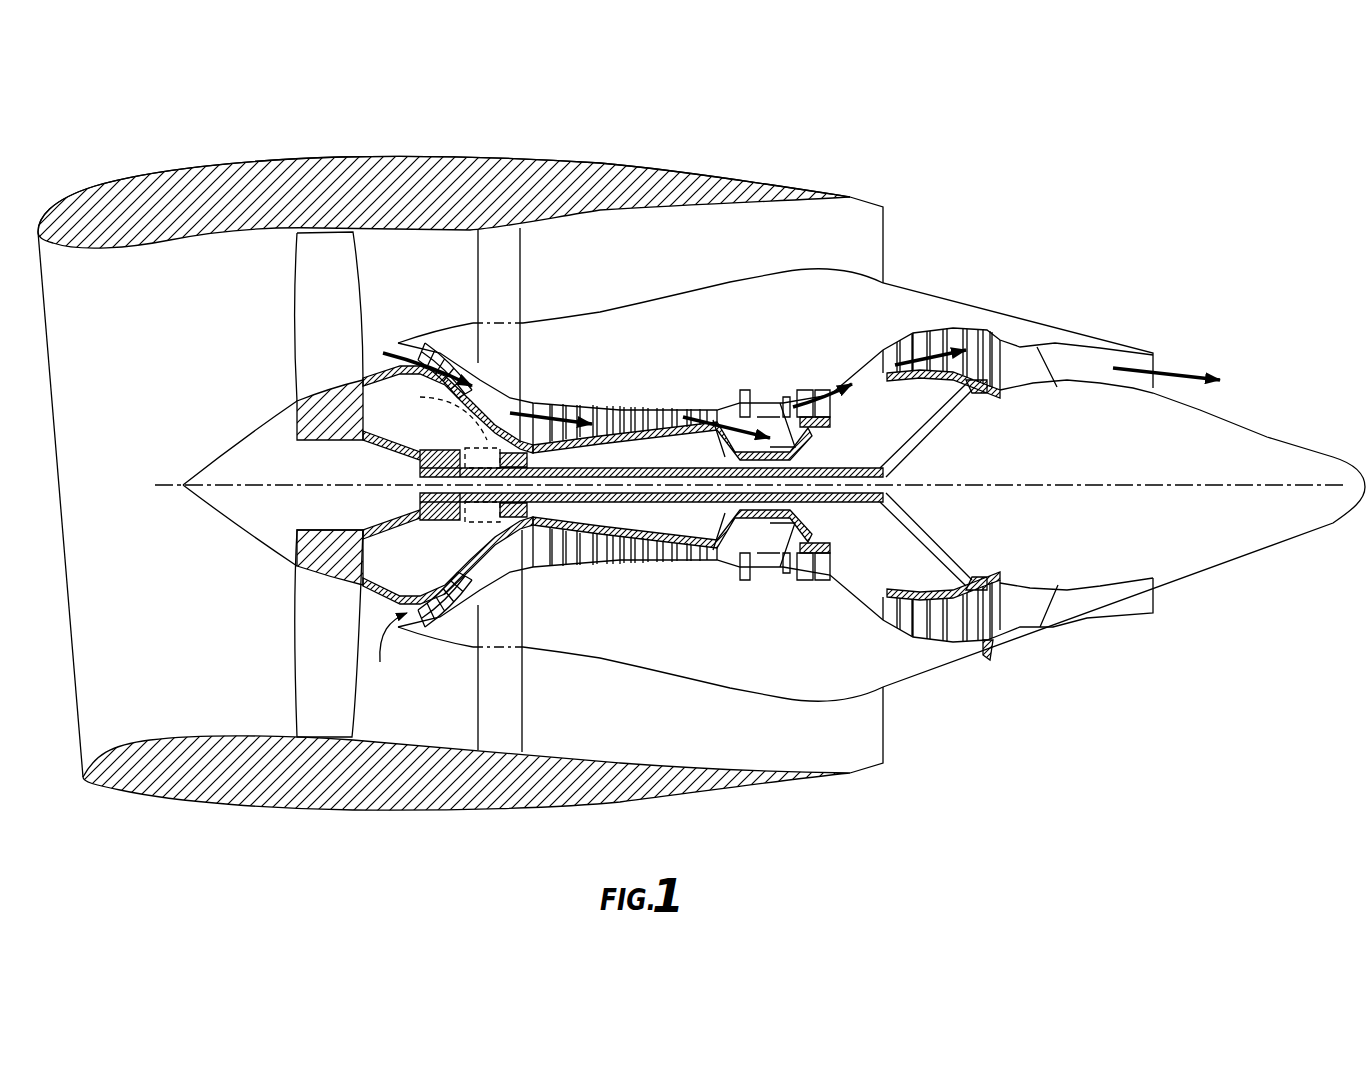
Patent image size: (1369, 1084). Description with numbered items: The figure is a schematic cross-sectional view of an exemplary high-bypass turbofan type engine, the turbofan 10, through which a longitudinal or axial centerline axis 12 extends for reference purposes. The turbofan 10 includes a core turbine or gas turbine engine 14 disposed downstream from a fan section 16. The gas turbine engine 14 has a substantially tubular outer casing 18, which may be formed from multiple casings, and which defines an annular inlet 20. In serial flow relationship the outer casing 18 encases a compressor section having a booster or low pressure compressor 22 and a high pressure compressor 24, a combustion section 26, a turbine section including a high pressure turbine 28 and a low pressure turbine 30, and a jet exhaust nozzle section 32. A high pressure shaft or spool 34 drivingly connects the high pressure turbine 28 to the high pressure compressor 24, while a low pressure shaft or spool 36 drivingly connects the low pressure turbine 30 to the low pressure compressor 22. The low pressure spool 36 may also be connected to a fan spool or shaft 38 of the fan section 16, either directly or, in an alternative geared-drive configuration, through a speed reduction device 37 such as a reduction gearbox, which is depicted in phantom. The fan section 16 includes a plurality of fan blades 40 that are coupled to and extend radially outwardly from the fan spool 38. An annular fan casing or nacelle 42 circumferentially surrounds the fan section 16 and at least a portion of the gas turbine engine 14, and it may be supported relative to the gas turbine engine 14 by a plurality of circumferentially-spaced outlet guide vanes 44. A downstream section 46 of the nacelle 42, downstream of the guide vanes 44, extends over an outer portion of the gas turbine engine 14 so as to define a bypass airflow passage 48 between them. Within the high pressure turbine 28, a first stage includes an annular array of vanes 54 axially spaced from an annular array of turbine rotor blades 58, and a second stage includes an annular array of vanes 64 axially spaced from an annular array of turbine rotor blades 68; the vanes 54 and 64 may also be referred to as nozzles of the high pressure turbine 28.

The turbofan 10 is at (1032, 186).
The centerline axis 12 is at (1093, 482).
The gas turbine engine 14 is at (689, 368).
The fan section 16 is at (344, 133).
The outer casing 18 is at (717, 685).
The annular inlet 20 is at (387, 651).
The low pressure compressor 22 is at (473, 578).
The high pressure compressor 24 is at (557, 562).
The combustion section 26 is at (763, 565).
The high pressure turbine 28 is at (830, 567).
The low pressure turbine 30 is at (987, 652).
The jet exhaust nozzle section 32 is at (1157, 365).
The high pressure shaft 34 is at (813, 430).
The low pressure shaft 36 is at (487, 448).
The speed reduction device 37 is at (438, 413).
The fan spool 38 is at (363, 440).
The fan blades 40 is at (297, 680).
The nacelle 42 is at (350, 812).
The outlet guide vanes 44 is at (524, 278).
The downstream section 46 is at (707, 165).
The bypass airflow passage 48 is at (682, 256).
The vanes 54 is at (778, 572).
The turbine rotor blades 58 is at (797, 578).
The vanes 64 is at (813, 580).
The turbine rotor blades 68 is at (833, 580).